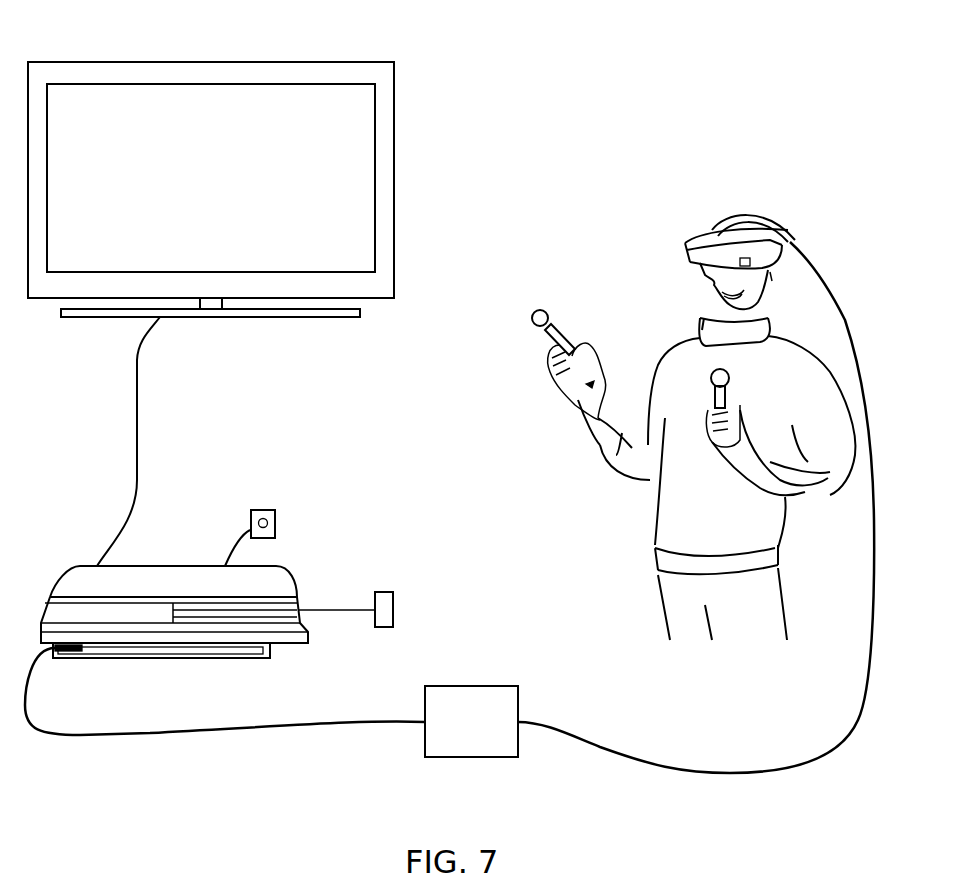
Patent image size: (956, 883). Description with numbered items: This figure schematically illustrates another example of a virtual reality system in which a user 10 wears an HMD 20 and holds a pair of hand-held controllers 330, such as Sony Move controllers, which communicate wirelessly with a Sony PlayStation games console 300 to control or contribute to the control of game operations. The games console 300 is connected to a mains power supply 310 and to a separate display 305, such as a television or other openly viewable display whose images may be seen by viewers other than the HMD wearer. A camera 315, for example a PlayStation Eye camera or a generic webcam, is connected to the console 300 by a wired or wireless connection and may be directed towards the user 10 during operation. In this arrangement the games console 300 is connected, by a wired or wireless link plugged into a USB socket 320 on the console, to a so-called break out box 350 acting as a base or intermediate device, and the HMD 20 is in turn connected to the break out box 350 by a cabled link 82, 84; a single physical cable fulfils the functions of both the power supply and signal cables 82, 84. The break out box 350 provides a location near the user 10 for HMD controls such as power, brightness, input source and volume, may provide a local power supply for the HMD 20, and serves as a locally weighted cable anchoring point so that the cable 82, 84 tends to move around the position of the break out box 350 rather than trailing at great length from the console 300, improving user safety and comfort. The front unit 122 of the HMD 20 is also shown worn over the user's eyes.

The display 305 is at (108, 62).
The games console 300 is at (183, 566).
The camera 315 is at (262, 510).
The mains power supply 310 is at (388, 592).
The USB socket 320 is at (72, 651).
The break out box 350 is at (470, 686).
The cable 82 is at (449, 507).
The cable 84 is at (695, 737).
The user 10 is at (653, 355).
The HMD 20 is at (790, 252).
The HMD visor / front unit 122 is at (685, 250).
The hand-held controller 330 is at (540, 311).